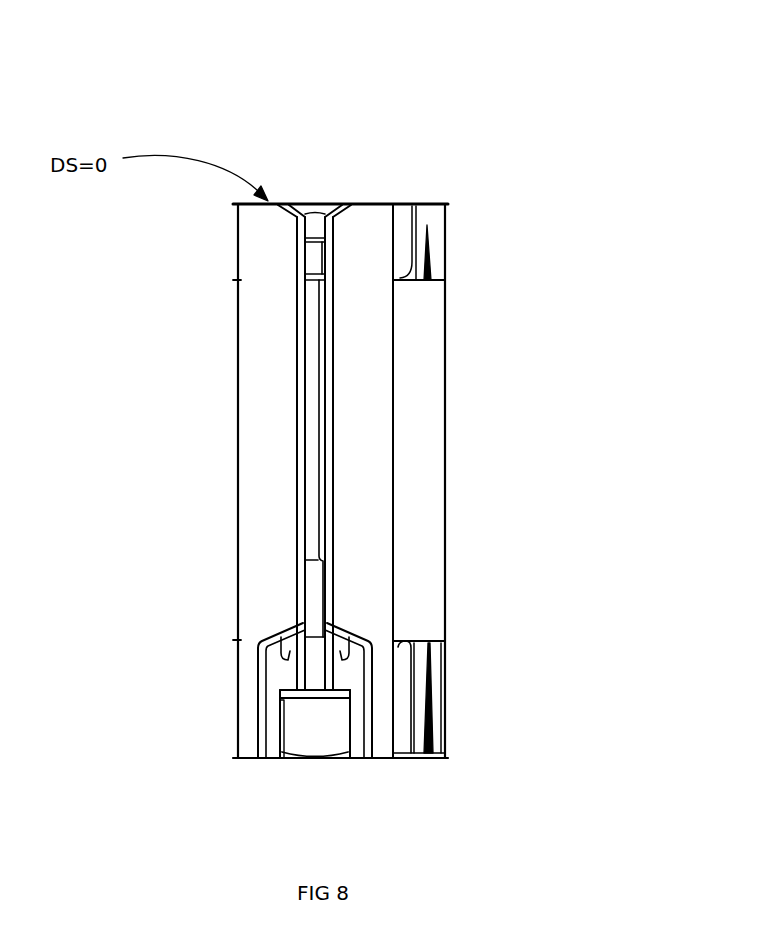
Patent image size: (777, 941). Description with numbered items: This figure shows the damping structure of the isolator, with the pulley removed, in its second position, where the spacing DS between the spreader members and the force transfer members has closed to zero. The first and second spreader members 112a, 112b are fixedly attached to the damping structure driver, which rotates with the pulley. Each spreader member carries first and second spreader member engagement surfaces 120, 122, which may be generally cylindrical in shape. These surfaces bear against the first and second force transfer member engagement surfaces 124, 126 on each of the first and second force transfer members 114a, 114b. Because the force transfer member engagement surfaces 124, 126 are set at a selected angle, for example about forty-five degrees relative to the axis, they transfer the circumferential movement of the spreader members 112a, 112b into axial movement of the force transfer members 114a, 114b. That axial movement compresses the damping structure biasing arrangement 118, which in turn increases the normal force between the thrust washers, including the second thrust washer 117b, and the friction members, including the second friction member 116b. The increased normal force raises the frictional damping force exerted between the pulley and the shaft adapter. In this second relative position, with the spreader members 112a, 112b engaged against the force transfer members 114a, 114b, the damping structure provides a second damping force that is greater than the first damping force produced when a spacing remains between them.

The first spreader member 112a is at (315, 207).
The second spreader member 112b is at (320, 745).
The first force transfer member 114a is at (260, 349).
The second force transfer member 114b is at (357, 232).
The second friction member 116b is at (402, 742).
The second thrust washer 117b is at (412, 752).
The damping structure biasing arrangement 118 is at (462, 680).
The first spreader member engagement surface 120 is at (293, 203).
The second spreader member engagement surface 122 is at (302, 727).
The first force transfer member engagement surface 124 is at (303, 207).
The second force transfer member engagement surface 126 is at (283, 663).